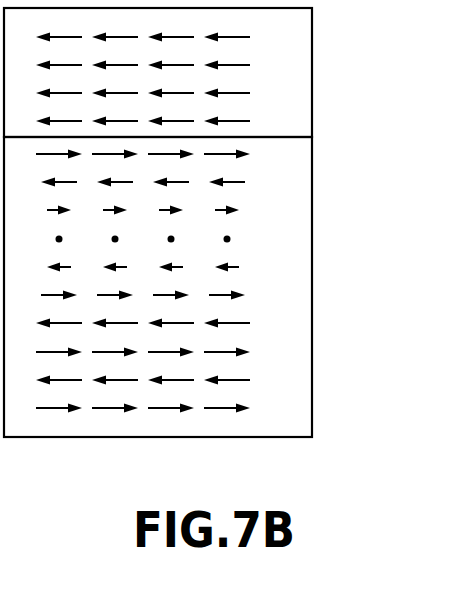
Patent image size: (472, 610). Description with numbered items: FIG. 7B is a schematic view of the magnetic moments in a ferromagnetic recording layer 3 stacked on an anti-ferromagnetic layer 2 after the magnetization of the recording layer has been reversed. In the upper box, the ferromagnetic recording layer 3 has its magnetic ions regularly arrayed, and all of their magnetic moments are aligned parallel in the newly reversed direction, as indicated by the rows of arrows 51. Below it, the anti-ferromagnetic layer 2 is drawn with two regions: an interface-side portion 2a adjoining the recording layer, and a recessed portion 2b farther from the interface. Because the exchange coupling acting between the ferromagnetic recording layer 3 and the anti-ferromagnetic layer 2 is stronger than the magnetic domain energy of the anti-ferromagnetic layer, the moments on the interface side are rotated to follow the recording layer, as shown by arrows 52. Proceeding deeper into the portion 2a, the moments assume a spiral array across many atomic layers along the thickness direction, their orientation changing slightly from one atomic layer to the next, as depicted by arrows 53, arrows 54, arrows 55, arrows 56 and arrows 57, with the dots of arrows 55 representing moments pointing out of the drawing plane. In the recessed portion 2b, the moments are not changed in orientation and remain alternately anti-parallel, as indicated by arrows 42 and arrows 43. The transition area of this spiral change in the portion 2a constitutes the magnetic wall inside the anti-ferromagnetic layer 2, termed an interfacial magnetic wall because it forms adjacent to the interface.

The ferromagnetic recording layer 3 is at (180, 72).
The anti-ferromagnetic layer 2 is at (212, 287).
The first pinned magnetic sub-layer 2a is at (205, 223).
The second pinned magnetic sub-layer 2b is at (206, 373).
The arrow M51 51 is at (164, 76).
The arrow M52 52 is at (164, 155).
The arrow M53 53 is at (166, 183).
The arrow M54 54 is at (169, 211).
The arrow M55 55 is at (174, 240).
The arrow M56 56 is at (169, 268).
The arrow M57 57 is at (166, 296).
The arrow M42 42 is at (164, 352).
The arrow M43 43 is at (164, 381).